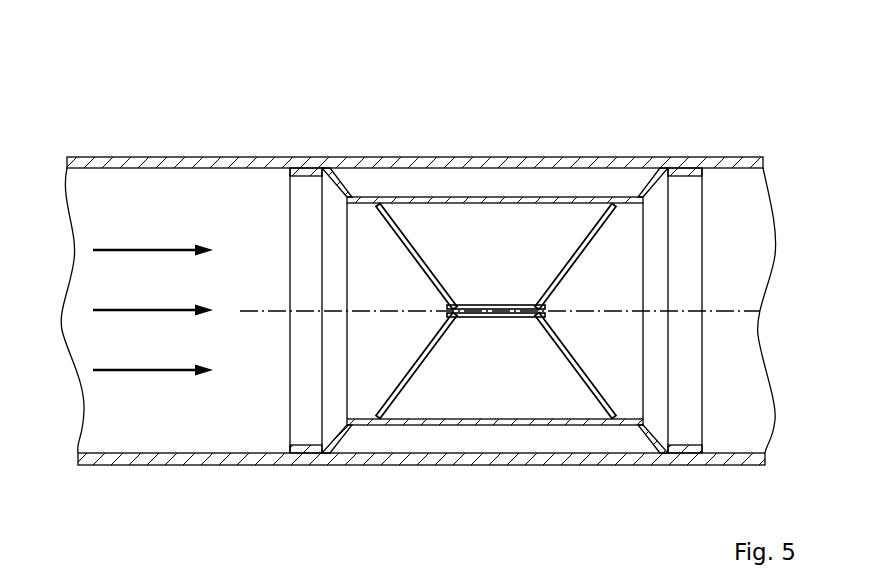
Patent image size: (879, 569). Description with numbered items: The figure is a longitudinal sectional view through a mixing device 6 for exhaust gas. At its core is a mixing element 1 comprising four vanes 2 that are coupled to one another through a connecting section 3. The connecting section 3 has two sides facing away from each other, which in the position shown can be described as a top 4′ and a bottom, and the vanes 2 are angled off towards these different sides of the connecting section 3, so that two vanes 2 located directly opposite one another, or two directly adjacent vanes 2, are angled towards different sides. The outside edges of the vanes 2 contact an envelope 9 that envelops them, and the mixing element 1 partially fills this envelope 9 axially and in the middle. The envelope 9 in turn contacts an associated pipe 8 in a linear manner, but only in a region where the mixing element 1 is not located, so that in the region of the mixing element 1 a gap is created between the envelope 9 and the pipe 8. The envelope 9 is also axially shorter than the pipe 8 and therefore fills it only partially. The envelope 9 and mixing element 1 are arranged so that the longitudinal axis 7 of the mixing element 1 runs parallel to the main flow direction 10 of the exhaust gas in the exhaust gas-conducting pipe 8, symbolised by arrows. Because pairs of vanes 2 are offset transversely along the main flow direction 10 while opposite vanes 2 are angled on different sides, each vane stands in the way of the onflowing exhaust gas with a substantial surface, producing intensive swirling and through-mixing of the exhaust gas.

The mixing element 1 is at (602, 352).
The vanes 2 is at (393, 233).
The connecting section 3 is at (495, 330).
The top side of connecting section 4′ is at (494, 305).
The mixing device 6 is at (130, 120).
The longitudinal axis of the mixing element 7 is at (248, 308).
The pipe 8 is at (404, 157).
The envelope 9 is at (494, 197).
The main flow direction 10 is at (145, 250).